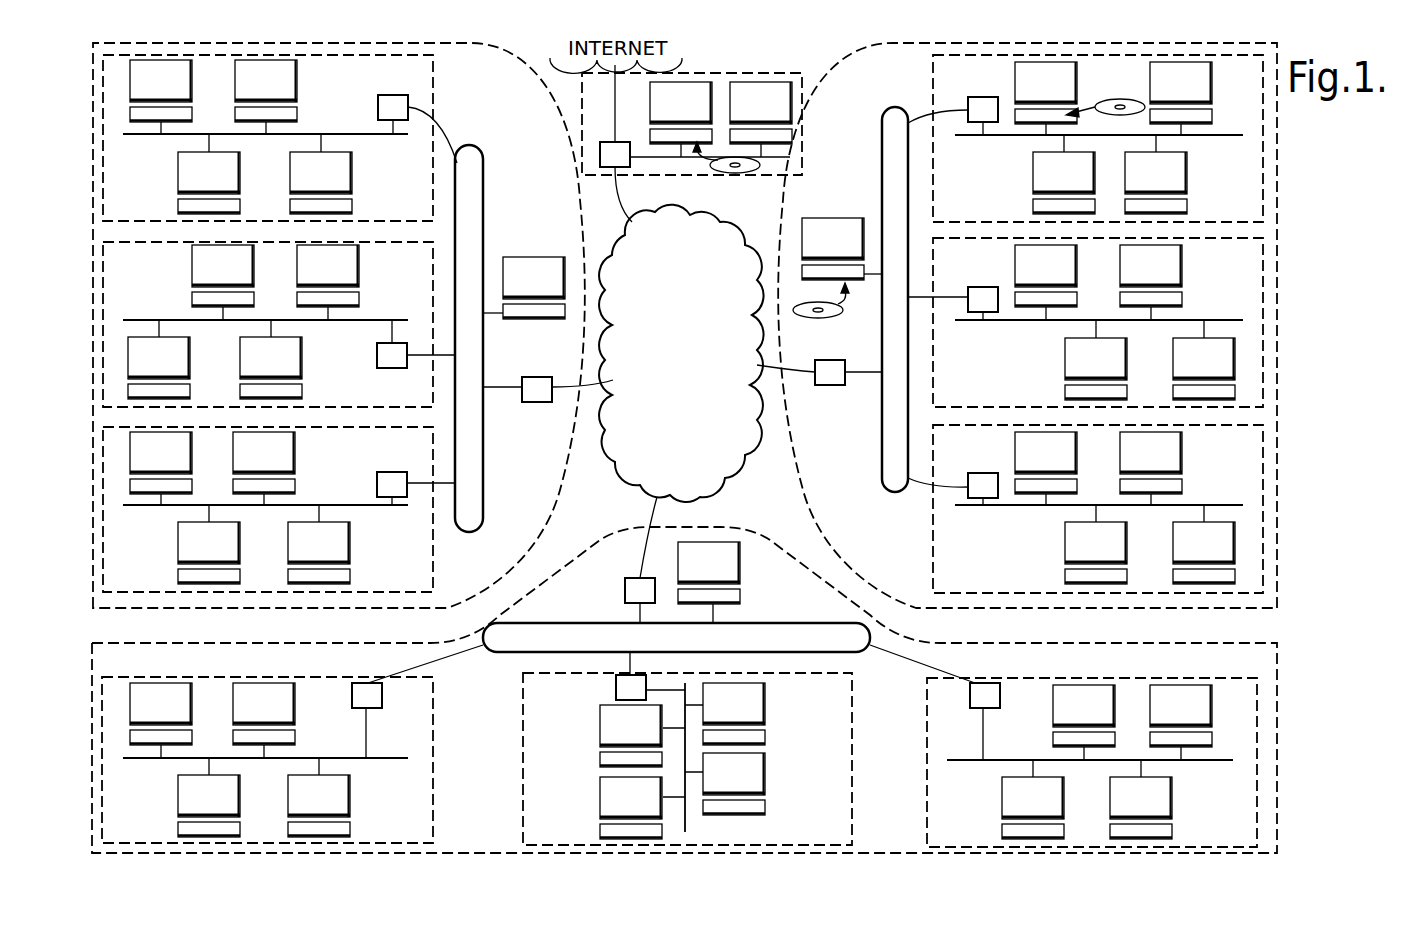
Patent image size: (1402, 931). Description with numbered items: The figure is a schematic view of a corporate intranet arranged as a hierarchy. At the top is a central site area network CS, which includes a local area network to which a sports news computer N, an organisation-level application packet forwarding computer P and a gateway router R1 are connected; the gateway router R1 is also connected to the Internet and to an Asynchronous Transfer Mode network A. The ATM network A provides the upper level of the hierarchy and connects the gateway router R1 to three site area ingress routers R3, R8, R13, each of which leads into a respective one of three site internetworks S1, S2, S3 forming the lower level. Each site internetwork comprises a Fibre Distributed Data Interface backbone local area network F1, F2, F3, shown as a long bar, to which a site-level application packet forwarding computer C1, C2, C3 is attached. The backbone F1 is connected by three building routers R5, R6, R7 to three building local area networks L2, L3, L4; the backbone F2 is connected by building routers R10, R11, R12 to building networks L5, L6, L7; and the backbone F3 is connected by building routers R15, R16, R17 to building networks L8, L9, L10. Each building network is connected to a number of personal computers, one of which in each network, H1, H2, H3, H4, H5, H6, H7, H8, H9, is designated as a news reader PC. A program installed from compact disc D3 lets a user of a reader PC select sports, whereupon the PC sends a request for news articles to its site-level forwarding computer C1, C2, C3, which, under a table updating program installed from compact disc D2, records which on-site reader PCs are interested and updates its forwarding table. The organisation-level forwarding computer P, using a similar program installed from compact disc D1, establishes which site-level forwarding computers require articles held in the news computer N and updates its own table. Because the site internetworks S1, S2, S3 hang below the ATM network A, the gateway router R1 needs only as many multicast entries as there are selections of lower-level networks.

The site internetwork S1 is at (440, 45).
The site internetwork S2 is at (1280, 415).
The site internetwork S3 is at (1282, 798).
The building local area network L2 is at (280, 138).
The building local area network L3 is at (279, 324).
The building local area network L4 is at (279, 509).
The building local area network L5 is at (1117, 138).
The building local area network L6 is at (1117, 322).
The building local area network L7 is at (1117, 509).
The building local area network L8 is at (267, 780).
The building local area network L9 is at (687, 768).
The building local area network L10 is at (1092, 782).
The news reader PC H1 is at (161, 91).
The news reader PC H2 is at (271, 368).
The news reader PC H3 is at (161, 463).
The news reader PC H4 is at (1046, 93).
The news reader PC H5 is at (1046, 276).
The news reader PC H6 is at (1204, 553).
The news reader PC H7 is at (209, 806).
The news reader PC H8 is at (734, 784).
The news reader PC H9 is at (1181, 716).
The gateway router R1 is at (600, 157).
The site area ingress router R3 is at (538, 402).
The building router R5 is at (378, 112).
The building router R6 is at (392, 367).
The building router R7 is at (392, 472).
The site area ingress router R8 is at (828, 385).
The building router R10 is at (988, 97).
The building router R11 is at (988, 287).
The building router R12 is at (988, 473).
The site area ingress router R13 is at (625, 592).
The building router R15 is at (380, 695).
The building router R16 is at (616, 690).
The building router R17 is at (970, 703).
The FDDI backbone local area network F1 is at (483, 200).
The FDDI backbone local area network F2 is at (882, 165).
The FDDI backbone local area network F3 is at (582, 623).
The site-level application packet forwarding computer C1 is at (524, 288).
The site-level application packet forwarding computer C2 is at (842, 249).
The site-level application packet forwarding computer C3 is at (709, 582).
The compact disc D1 is at (735, 175).
The compact disc D2 is at (822, 320).
The compact disc D3 is at (1128, 100).
The ATM network A is at (742, 463).
The central site area network CS is at (677, 132).
The organisation-level application packet forwarding computer P is at (681, 113).
The sports news computer N is at (761, 113).